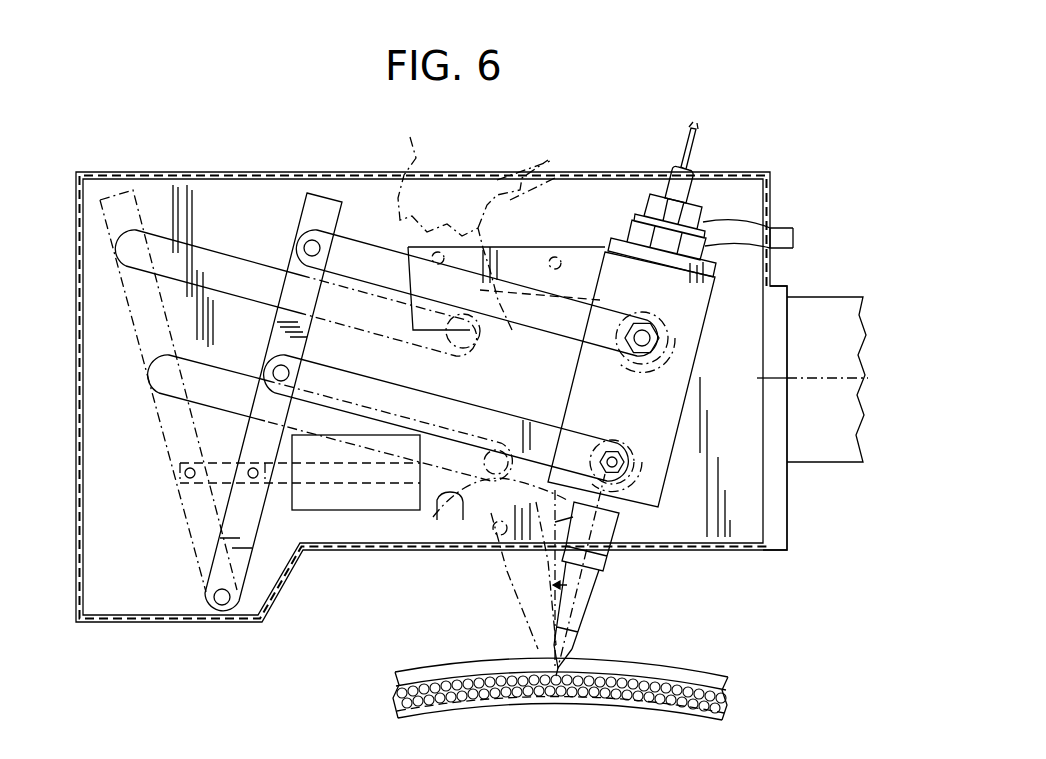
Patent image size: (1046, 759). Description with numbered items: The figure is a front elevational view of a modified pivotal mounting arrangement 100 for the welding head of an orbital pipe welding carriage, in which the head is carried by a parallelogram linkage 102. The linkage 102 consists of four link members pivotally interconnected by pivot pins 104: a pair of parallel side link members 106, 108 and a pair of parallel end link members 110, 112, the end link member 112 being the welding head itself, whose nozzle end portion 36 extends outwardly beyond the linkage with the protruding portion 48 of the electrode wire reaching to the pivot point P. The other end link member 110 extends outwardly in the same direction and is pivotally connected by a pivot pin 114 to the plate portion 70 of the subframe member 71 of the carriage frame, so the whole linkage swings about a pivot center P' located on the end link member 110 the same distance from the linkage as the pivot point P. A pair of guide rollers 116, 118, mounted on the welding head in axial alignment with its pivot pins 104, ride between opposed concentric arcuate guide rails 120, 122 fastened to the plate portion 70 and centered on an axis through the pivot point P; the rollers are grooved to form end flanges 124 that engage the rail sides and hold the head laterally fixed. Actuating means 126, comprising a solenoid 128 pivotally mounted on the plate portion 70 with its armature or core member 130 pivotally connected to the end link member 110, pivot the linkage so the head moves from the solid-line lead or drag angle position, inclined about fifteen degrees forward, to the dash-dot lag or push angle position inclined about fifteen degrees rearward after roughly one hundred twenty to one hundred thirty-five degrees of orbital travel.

The plate portion 70 is at (110, 518).
The subframe member 71 is at (835, 452).
The modified pivotal mounting arrangement 100 is at (292, 208).
The parallelogram linkage 102 is at (279, 293).
The pivot pins 104 is at (314, 240).
The side link member 106 is at (352, 245).
The side link member 108 is at (382, 392).
The end link member 110 is at (278, 328).
The end link member 112 is at (690, 409).
The pivot pin 114 is at (205, 585).
The guide roller 116 is at (652, 338).
The guide roller 118 is at (664, 488).
The arcuate guide rail 120 is at (463, 350).
The arcuate guide rail 122 is at (462, 490).
The end flanges 124 is at (660, 382).
The actuating means 126 is at (331, 514).
The solenoid 128 is at (370, 500).
The armature or core member 130 is at (280, 480).
The welding nozzle end 36 is at (582, 630).
The protruding portion of wire electrode 48 is at (550, 668).